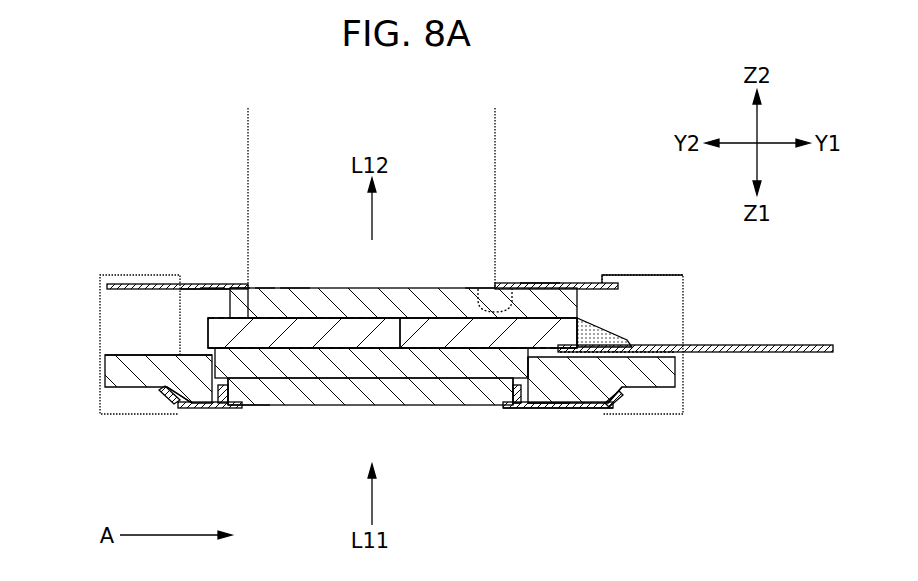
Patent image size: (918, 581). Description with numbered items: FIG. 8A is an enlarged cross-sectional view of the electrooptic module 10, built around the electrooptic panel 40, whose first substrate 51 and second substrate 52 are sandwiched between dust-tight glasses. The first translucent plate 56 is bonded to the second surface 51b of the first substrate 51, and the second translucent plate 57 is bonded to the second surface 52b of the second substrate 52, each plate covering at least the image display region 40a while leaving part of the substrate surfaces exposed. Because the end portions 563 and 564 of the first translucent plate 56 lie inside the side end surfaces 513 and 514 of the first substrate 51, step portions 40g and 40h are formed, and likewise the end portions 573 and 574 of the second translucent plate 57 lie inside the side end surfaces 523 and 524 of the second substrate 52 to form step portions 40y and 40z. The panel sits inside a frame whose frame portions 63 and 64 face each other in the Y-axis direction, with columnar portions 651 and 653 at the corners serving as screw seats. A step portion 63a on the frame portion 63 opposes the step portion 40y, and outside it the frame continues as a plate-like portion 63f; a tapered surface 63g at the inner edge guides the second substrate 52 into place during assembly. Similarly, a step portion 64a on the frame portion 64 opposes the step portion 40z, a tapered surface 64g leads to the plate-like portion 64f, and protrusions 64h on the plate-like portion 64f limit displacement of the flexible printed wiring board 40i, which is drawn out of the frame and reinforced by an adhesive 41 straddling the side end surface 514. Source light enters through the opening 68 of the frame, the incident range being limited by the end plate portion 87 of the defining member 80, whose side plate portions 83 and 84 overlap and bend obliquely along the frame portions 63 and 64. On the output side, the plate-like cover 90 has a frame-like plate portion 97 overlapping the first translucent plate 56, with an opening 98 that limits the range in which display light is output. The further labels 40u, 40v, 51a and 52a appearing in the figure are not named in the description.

The electrooptic module 10 is at (625, 172).
The electrooptic panel 40 is at (385, 208).
The image display region 40a is at (248, 120).
The step portion 40g is at (263, 287).
The step portion 40h is at (475, 287).
The flexible printed wiring board 40i is at (780, 353).
The lead surface 40u is at (292, 287).
The lead recess 40v is at (463, 288).
The step portion 40y is at (255, 408).
The step portion 40z is at (500, 406).
The adhesive 41 is at (610, 287).
The first substrate 51 is at (398, 330).
The first lead lower surface 51a is at (410, 340).
The second surface 51b is at (350, 320).
The second substrate 52 is at (426, 345).
The second lead lower surface 52a is at (425, 352).
The second surface 52b is at (343, 395).
The first translucent plate 56 is at (332, 300).
The second translucent plate 57 is at (366, 393).
The frame portion 63 is at (112, 378).
The step portion 63a is at (192, 408).
The plate-like portion 63f is at (128, 350).
The tapered surface 63g is at (270, 400).
The frame portion 64 is at (665, 377).
The step portion 64a is at (562, 403).
The plate-like portion 64f is at (622, 397).
The tapered surface 64g is at (480, 390).
The protrusions 64h is at (660, 348).
The opening 68 is at (243, 408).
The defining member 80 is at (514, 430).
The side plate portion 83 is at (165, 404).
The side plate portion 84 is at (650, 358).
The end plate portion 87 is at (523, 410).
The plate-like cover 90 is at (212, 270).
The frame-like plate portion 97 is at (240, 287).
The opening 98 is at (253, 287).
The side end surface 513 is at (163, 287).
The side end surface 514 is at (585, 287).
The side end surface 523 is at (125, 417).
The side end surface 524 is at (580, 408).
The end portion 563 is at (197, 287).
The end portion 564 is at (536, 283).
The end portion 573 is at (220, 404).
The end portion 574 is at (530, 405).
The columnar portion 651 is at (100, 302).
The columnar portion 653 is at (683, 293).